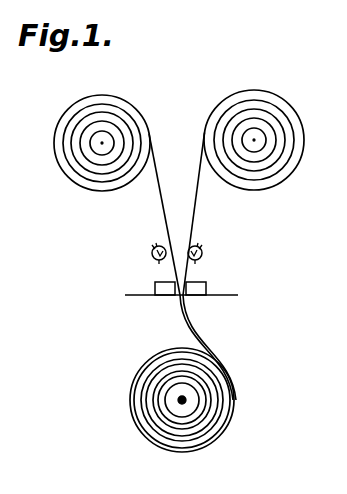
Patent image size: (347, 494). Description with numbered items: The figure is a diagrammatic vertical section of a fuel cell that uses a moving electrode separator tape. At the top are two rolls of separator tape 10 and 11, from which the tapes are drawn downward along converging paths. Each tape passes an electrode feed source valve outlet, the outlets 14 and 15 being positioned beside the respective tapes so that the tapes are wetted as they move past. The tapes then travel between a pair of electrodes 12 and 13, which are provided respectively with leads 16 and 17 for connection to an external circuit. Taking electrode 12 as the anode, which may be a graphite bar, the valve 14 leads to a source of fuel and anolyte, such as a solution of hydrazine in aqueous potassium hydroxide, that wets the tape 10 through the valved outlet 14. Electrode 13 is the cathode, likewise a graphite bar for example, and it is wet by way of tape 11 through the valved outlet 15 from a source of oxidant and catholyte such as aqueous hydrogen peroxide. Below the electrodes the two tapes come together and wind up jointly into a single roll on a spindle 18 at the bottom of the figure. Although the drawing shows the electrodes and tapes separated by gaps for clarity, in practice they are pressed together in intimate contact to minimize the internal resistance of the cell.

The separator tape roll 10 is at (131, 96).
The separator tape roll 11 is at (289, 101).
The electrode 12 is at (154, 284).
The electrode 13 is at (208, 285).
The electrode feed source valve outlet 14 is at (151, 250).
The electrode feed source valve outlet 15 is at (203, 250).
The lead 16 is at (125, 298).
The lead 17 is at (238, 300).
The spindle 18 is at (186, 400).